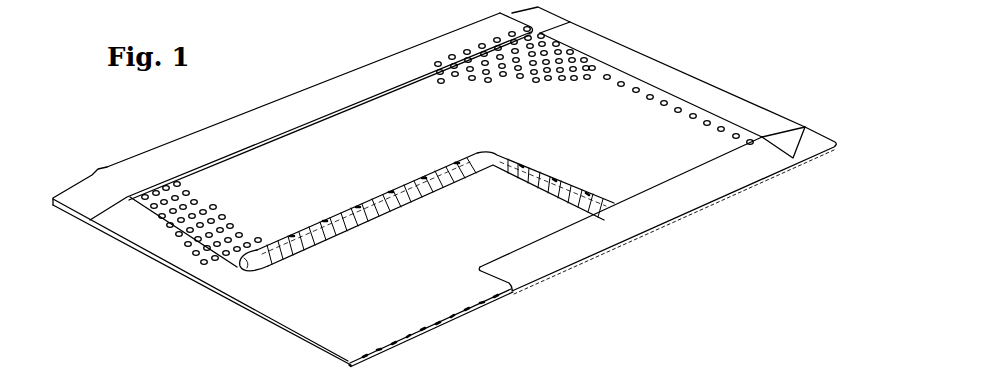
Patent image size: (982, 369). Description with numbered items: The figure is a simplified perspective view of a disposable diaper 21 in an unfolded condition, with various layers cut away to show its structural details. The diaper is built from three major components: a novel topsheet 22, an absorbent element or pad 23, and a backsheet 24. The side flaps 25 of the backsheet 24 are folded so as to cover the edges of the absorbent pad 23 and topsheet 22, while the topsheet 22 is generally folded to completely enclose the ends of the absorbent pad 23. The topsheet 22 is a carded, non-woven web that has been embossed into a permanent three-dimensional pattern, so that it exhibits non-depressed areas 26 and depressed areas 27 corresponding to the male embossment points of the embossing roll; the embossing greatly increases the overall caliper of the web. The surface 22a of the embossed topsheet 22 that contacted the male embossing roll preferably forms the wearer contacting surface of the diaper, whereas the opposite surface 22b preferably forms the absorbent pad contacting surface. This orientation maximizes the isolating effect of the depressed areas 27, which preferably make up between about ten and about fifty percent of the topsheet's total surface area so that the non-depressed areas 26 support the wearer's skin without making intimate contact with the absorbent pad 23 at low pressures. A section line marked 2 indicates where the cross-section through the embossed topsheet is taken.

The disposable diaper 21 is at (697, 75).
The topsheet 22 is at (390, 97).
The wearer contacting surface of the embossed topsheet 22a is at (351, 195).
The absorbent pad contacting surface of the topsheet 22b is at (327, 240).
The absorbent element or pad 23 is at (291, 243).
The backsheet 24 is at (242, 284).
The side flaps of the backsheet 25 is at (271, 116).
The non-depressed areas 26 is at (414, 163).
The depressed areas 27 is at (187, 183).
The section line 2- 2 is at (498, 47).